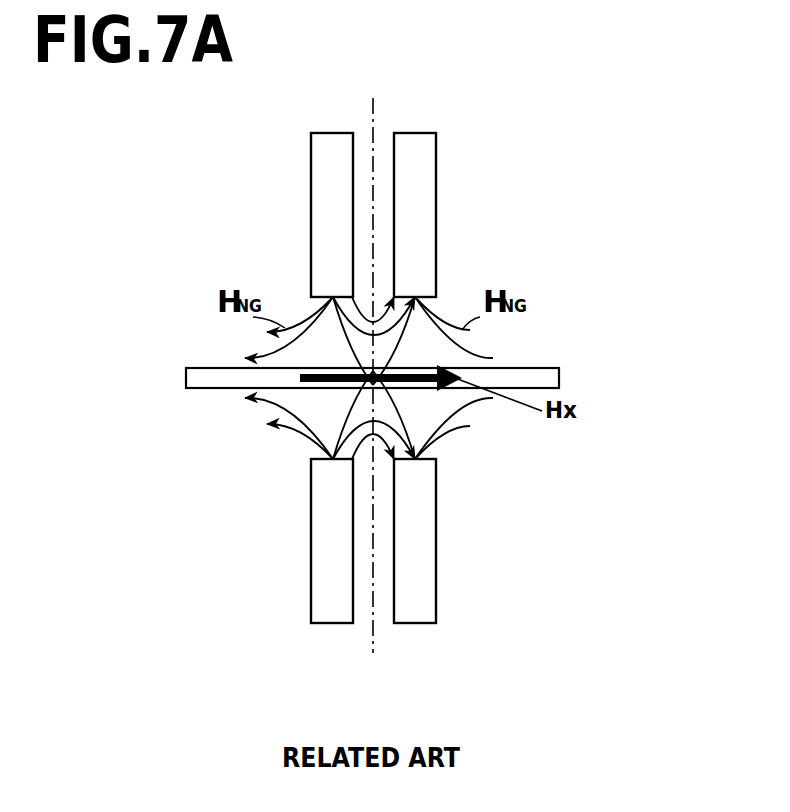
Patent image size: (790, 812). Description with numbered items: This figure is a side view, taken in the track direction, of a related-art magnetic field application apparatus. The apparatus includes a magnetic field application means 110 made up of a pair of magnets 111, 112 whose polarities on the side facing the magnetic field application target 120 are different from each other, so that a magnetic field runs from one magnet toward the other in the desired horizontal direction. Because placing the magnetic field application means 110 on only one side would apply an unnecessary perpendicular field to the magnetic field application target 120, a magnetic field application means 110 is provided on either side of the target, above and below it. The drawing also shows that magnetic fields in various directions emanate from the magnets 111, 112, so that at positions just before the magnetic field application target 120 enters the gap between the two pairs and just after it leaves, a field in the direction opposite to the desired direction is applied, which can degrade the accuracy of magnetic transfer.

The magnetic field application means 110 is at (455, 72).
The magnet 111 is at (322, 133).
The magnet 112 is at (425, 133).
The magnetic field application target 120 is at (559, 383).